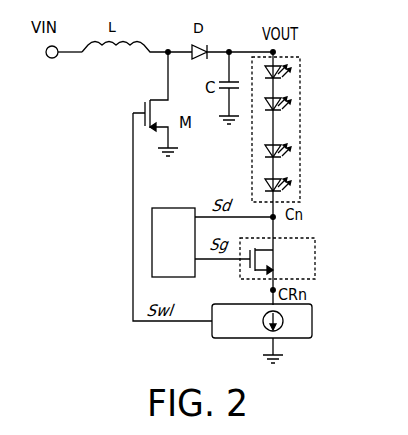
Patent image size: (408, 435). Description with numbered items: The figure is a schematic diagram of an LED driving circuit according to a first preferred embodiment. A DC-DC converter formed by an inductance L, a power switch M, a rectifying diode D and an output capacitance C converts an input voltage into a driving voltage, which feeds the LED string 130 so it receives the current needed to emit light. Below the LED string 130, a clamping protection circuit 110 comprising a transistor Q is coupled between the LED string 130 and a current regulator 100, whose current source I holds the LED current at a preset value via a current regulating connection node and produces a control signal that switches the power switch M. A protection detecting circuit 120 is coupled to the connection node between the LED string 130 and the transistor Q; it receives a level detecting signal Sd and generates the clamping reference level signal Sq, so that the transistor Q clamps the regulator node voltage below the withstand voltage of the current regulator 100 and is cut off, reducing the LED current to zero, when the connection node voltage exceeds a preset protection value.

The current regulator 100 is at (262, 321).
The clamping protection circuit 110 is at (314, 250).
The protection detecting circuit 120 is at (173, 242).
The LED string 130 is at (303, 124).